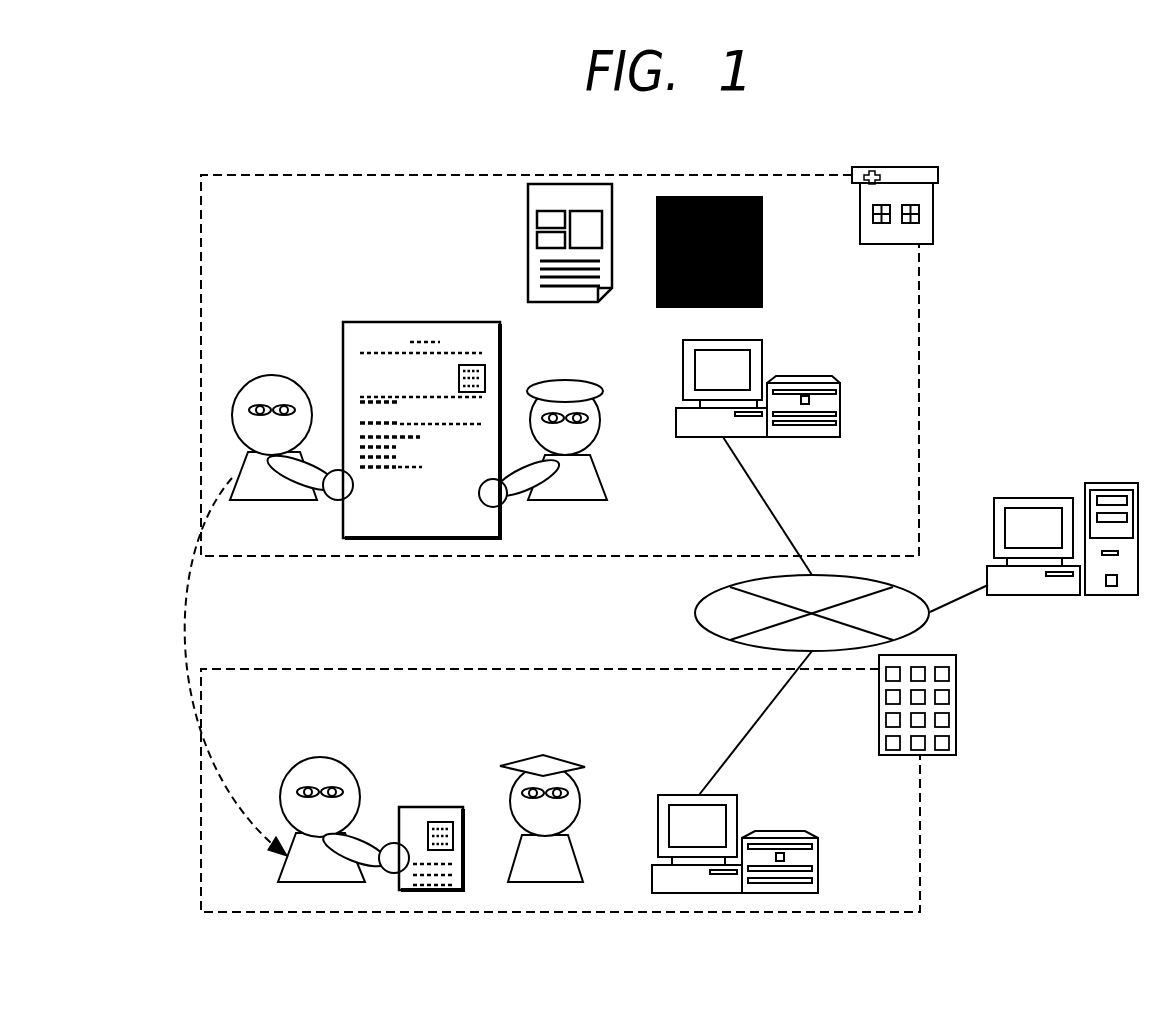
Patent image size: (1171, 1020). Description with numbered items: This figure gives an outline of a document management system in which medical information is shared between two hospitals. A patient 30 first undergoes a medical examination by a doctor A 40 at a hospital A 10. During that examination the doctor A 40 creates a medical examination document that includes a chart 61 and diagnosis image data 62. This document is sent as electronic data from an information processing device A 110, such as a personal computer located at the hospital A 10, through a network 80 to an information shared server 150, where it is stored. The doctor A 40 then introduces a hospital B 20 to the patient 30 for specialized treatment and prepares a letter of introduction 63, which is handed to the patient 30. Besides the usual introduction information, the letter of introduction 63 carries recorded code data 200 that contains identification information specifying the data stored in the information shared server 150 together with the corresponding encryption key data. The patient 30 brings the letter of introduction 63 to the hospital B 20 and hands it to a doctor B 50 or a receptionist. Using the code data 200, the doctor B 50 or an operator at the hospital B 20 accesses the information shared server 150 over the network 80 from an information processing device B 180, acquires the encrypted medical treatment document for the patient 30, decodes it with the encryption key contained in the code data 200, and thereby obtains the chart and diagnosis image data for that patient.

The hospital A 10 is at (312, 175).
The hospital B 20 is at (315, 669).
The patient 30 is at (277, 375).
The doctor A 40 is at (590, 380).
The doctor B 50 is at (560, 762).
The chart 61 is at (527, 225).
The diagnosis image data 62 is at (762, 227).
The letter of introduction 63 is at (452, 322).
The network 80 is at (694, 612).
The information processing device A 110 is at (777, 361).
The information shared server 150 is at (1083, 463).
The information processing device B 180 is at (753, 814).
The code data 200 is at (485, 374).